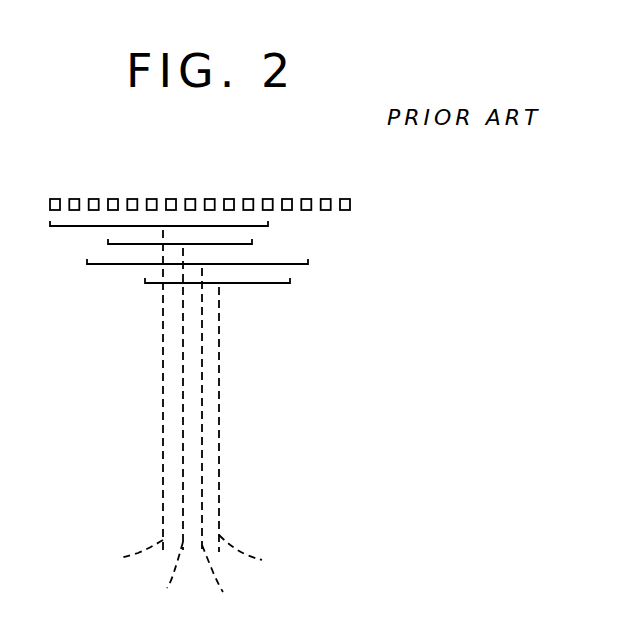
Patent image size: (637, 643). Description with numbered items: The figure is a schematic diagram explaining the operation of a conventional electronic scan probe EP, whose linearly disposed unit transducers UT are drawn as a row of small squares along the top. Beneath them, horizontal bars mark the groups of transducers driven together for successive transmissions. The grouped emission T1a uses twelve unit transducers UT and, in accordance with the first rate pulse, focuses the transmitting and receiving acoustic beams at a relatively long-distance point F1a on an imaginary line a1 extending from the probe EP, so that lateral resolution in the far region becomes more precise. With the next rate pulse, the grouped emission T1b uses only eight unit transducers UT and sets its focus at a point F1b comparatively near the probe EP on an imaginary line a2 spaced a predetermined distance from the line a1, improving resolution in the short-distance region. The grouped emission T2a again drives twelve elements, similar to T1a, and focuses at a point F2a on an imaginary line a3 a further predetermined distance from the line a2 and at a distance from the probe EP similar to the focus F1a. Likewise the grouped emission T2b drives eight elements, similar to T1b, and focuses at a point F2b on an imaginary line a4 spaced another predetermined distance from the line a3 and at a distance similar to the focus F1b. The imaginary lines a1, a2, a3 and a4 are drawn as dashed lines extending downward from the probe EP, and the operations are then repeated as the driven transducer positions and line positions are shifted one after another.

The electronic scan probe EP is at (320, 192).
The unit transducers UT is at (113, 199).
The grouped emission T1a is at (268, 226).
The grouped emission T1b is at (252, 244).
The grouped emission T2a is at (308, 264).
The grouped emission T2b is at (277, 283).
The focus F1a is at (163, 427).
The focus F1b is at (183, 337).
The focus F2a is at (202, 445).
The focus F2b is at (219, 362).
The imaginary line a1 is at (127, 558).
The imaginary line a2 is at (159, 577).
The imaginary line a3 is at (226, 579).
The imaginary line a4 is at (252, 557).